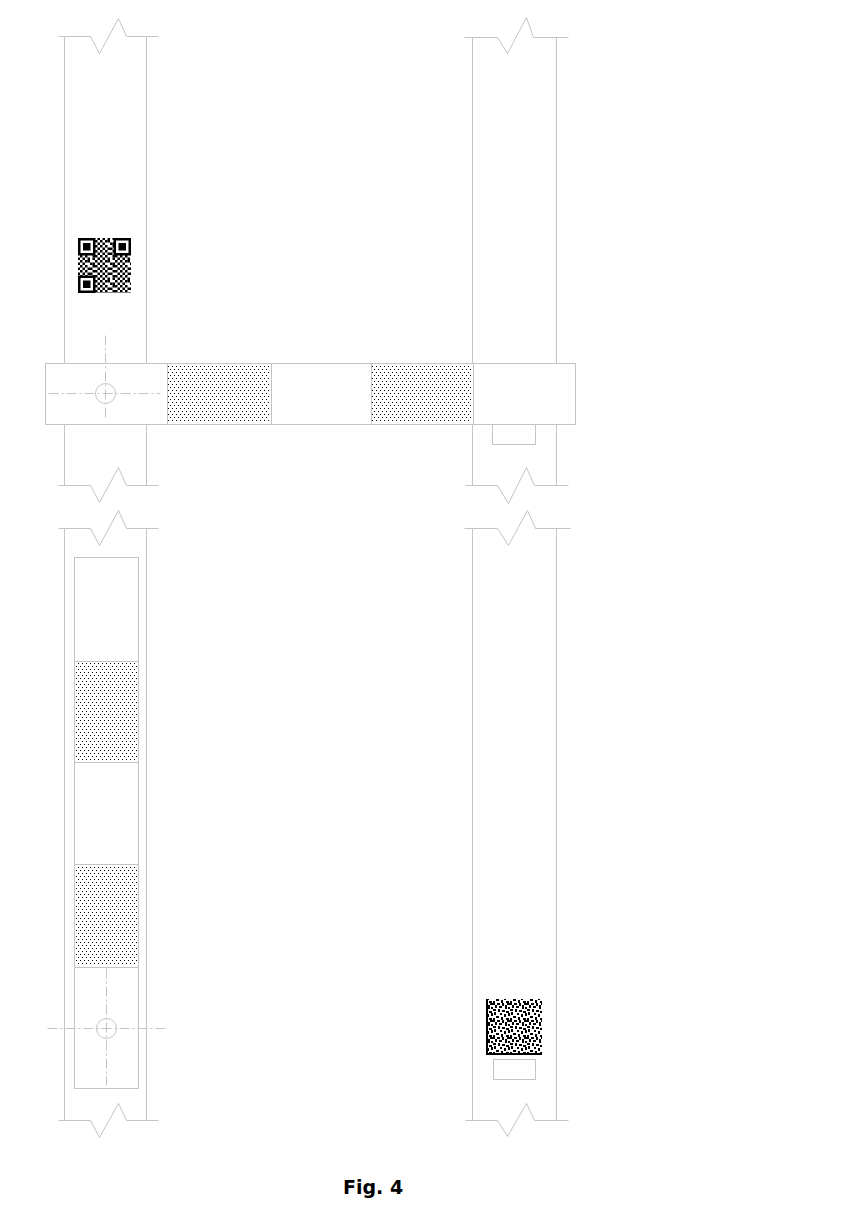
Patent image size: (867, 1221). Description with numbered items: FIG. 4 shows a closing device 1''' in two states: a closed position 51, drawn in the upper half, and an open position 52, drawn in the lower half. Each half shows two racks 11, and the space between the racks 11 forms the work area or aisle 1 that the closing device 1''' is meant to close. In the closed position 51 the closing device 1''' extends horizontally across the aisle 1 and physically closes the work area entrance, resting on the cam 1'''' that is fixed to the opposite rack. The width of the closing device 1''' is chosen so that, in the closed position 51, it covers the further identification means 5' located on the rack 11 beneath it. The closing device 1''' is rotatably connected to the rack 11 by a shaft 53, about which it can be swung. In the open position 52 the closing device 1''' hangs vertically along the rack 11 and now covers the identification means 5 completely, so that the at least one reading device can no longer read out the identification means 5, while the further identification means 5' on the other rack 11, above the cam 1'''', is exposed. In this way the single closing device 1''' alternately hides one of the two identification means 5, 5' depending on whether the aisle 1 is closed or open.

The work area 1 is at (311, 619).
The closing device 1''' is at (223, 581).
The cam 1'''' is at (453, 752).
The identification means 5 is at (147, 247).
The further identification means 5' is at (459, 991).
The racks 11 is at (115, 103).
The closed position 51 is at (600, 89).
The open position 52 is at (600, 719).
The shaft 53 is at (105, 393).